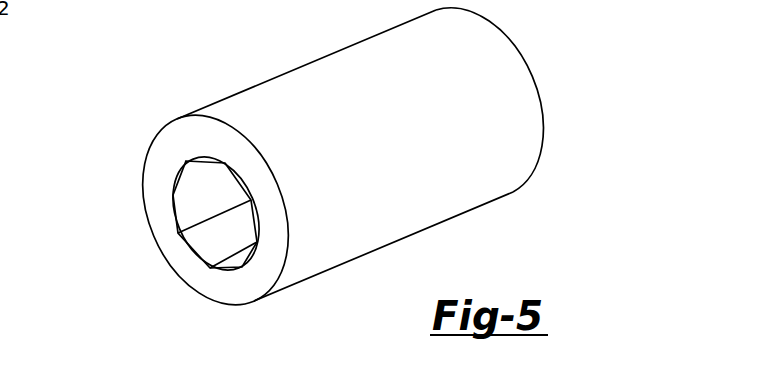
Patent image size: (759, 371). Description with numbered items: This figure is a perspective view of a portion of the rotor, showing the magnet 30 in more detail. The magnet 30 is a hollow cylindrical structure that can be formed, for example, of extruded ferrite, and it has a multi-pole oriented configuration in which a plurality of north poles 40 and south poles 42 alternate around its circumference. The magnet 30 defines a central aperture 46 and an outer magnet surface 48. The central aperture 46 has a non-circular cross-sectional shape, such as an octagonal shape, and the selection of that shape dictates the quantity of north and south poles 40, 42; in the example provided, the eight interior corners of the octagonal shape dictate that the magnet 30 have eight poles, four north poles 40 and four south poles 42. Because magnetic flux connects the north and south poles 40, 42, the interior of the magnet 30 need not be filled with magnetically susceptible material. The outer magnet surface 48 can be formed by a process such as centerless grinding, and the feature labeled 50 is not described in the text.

The magnet 30 is at (343, 167).
The north poles 40 is at (203, 143).
The south poles 42 is at (237, 160).
The central aperture 46 is at (222, 237).
The outer magnet surface 48 is at (490, 127).
The socket inner wall 50 is at (192, 175).